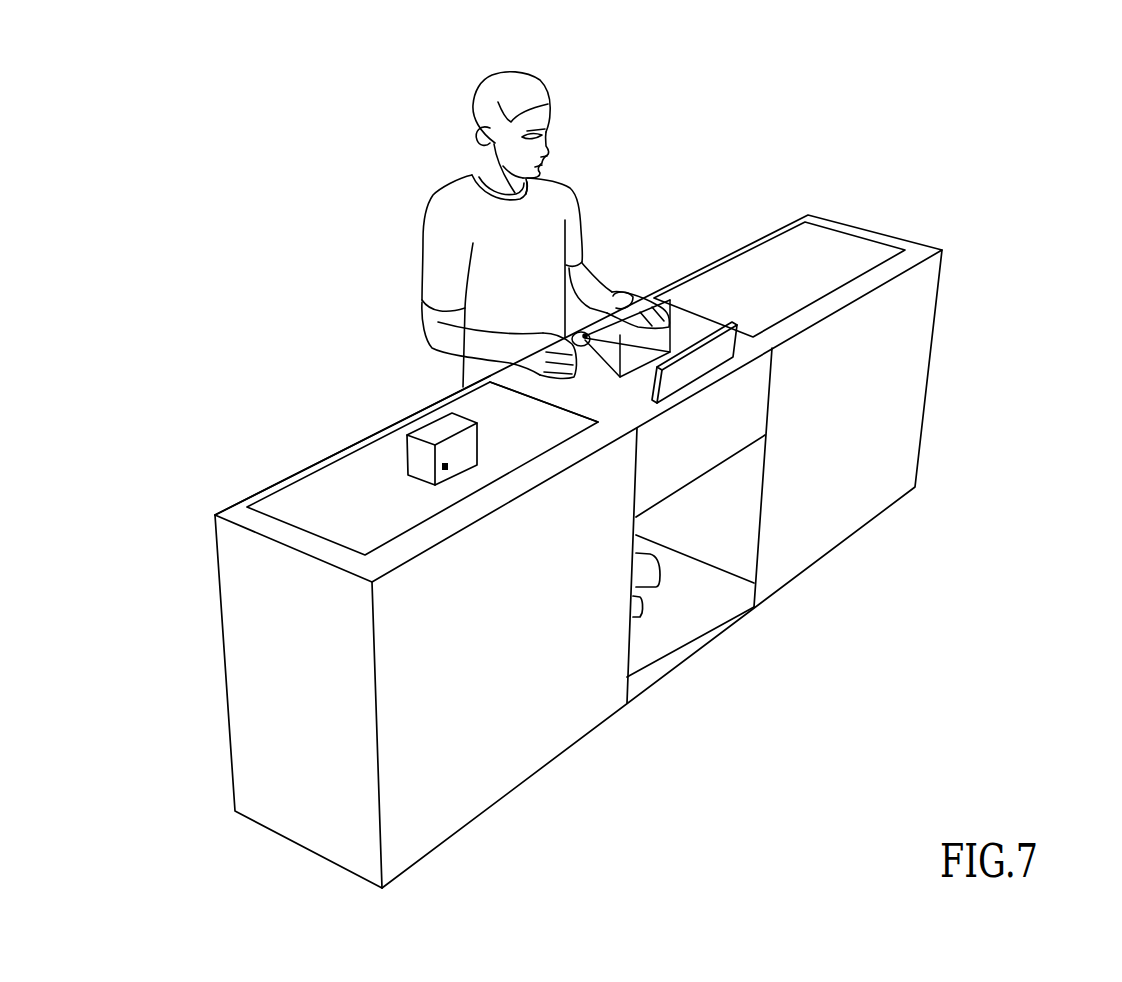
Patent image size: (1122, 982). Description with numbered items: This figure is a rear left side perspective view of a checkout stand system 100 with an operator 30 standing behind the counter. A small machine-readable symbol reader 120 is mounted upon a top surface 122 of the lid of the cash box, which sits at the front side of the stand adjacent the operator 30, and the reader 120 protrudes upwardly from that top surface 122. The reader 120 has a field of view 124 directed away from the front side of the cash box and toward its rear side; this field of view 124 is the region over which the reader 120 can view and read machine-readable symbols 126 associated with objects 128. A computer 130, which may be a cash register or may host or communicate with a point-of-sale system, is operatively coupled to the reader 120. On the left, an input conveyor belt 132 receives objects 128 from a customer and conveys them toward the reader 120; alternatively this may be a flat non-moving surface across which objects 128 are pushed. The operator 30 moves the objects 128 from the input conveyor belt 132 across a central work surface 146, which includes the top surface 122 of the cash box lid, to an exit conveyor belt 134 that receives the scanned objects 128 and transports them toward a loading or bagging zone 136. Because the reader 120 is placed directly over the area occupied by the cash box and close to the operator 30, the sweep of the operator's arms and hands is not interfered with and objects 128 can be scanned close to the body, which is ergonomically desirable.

The checkout stand system 100 is at (938, 121).
The operator 30 is at (438, 203).
The machine-readable symbol reader 120 is at (580, 334).
The top surface 122 is at (460, 370).
The field of view 124 is at (632, 380).
The machine-readable symbols 126 is at (433, 481).
The objects 128 is at (413, 453).
The computer 130 is at (723, 352).
The input conveyor belt 132 is at (480, 412).
The exit conveyor belt 134 is at (692, 292).
The bagging zone 136 is at (748, 233).
The central work surface 146 is at (583, 388).